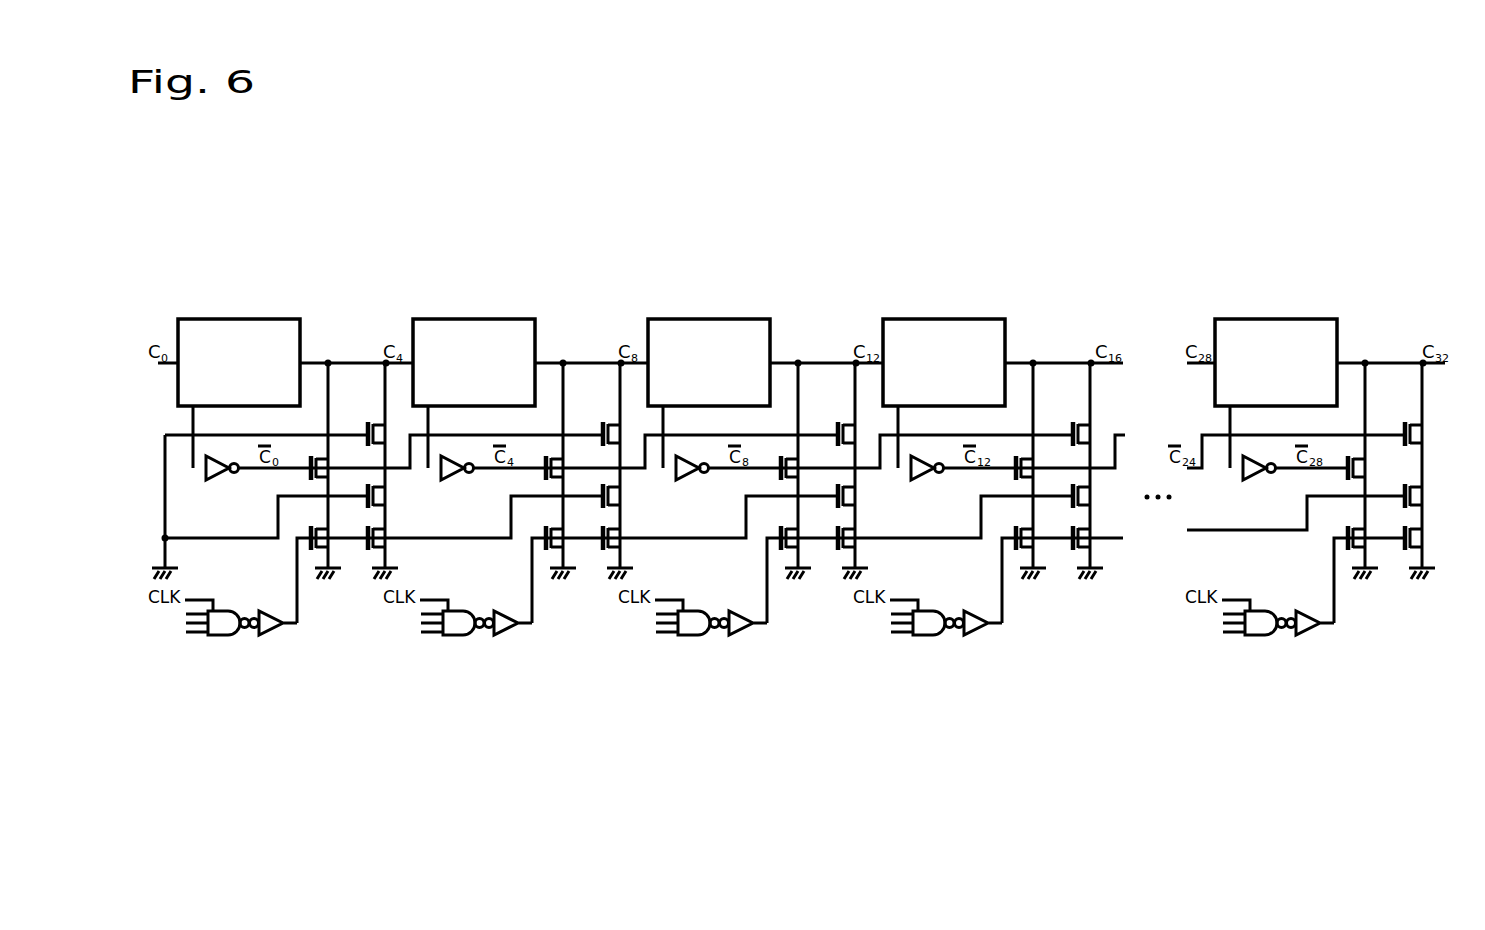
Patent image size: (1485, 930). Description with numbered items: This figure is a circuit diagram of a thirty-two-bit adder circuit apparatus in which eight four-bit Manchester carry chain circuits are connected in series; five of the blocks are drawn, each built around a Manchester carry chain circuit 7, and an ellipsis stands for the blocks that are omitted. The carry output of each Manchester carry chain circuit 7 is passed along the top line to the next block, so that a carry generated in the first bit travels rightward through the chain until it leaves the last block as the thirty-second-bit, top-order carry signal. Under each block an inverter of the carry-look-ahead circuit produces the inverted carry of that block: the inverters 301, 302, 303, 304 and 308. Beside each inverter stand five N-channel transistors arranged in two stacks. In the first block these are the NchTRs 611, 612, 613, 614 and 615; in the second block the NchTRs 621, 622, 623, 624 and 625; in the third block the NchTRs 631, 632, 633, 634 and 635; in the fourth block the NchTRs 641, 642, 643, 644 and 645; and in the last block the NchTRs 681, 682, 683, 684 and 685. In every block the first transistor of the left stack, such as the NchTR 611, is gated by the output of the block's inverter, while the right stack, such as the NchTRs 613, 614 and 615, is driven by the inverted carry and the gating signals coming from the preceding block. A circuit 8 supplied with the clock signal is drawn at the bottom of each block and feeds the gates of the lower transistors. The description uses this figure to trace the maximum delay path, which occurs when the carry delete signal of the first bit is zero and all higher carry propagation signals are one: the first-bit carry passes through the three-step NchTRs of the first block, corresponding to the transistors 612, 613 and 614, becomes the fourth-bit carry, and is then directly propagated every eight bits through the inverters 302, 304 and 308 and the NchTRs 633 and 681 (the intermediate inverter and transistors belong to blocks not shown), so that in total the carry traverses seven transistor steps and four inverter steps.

The Manchester carry chain circuit 7 is at (278, 319).
The clock gating circuit (AND gate and inverter) 8 is at (229, 640).
The inverter 301 is at (217, 481).
The inverter 302 is at (452, 481).
The inverter 303 is at (687, 481).
The inverter 304 is at (922, 481).
The inverter 308 is at (1254, 481).
The NchTR 611 is at (325, 464).
The NchTR 612 is at (323, 538).
The NchTR 613 is at (382, 437).
The NchTR 614 is at (382, 497).
The NchTR 615 is at (382, 535).
The NchTR 621 is at (560, 464).
The NchTR 622 is at (558, 538).
The NchTR 623 is at (617, 437).
The NchTR 624 is at (617, 497).
The NchTR 625 is at (617, 535).
The NchTR 631 is at (795, 464).
The NchTR 632 is at (793, 538).
The NchTR 633 is at (852, 437).
The NchTR 634 is at (852, 497).
The NchTR 635 is at (852, 535).
The NchTR 641 is at (1030, 464).
The NchTR 642 is at (1028, 538).
The NchTR 643 is at (1087, 437).
The NchTR 644 is at (1088, 495).
The NchTR 645 is at (1088, 535).
The NchTR 681 is at (1362, 464).
The NchTR 682 is at (1360, 538).
The NchTR 683 is at (1420, 432).
The NchTR 684 is at (1418, 492).
The NchTR 685 is at (1420, 533).